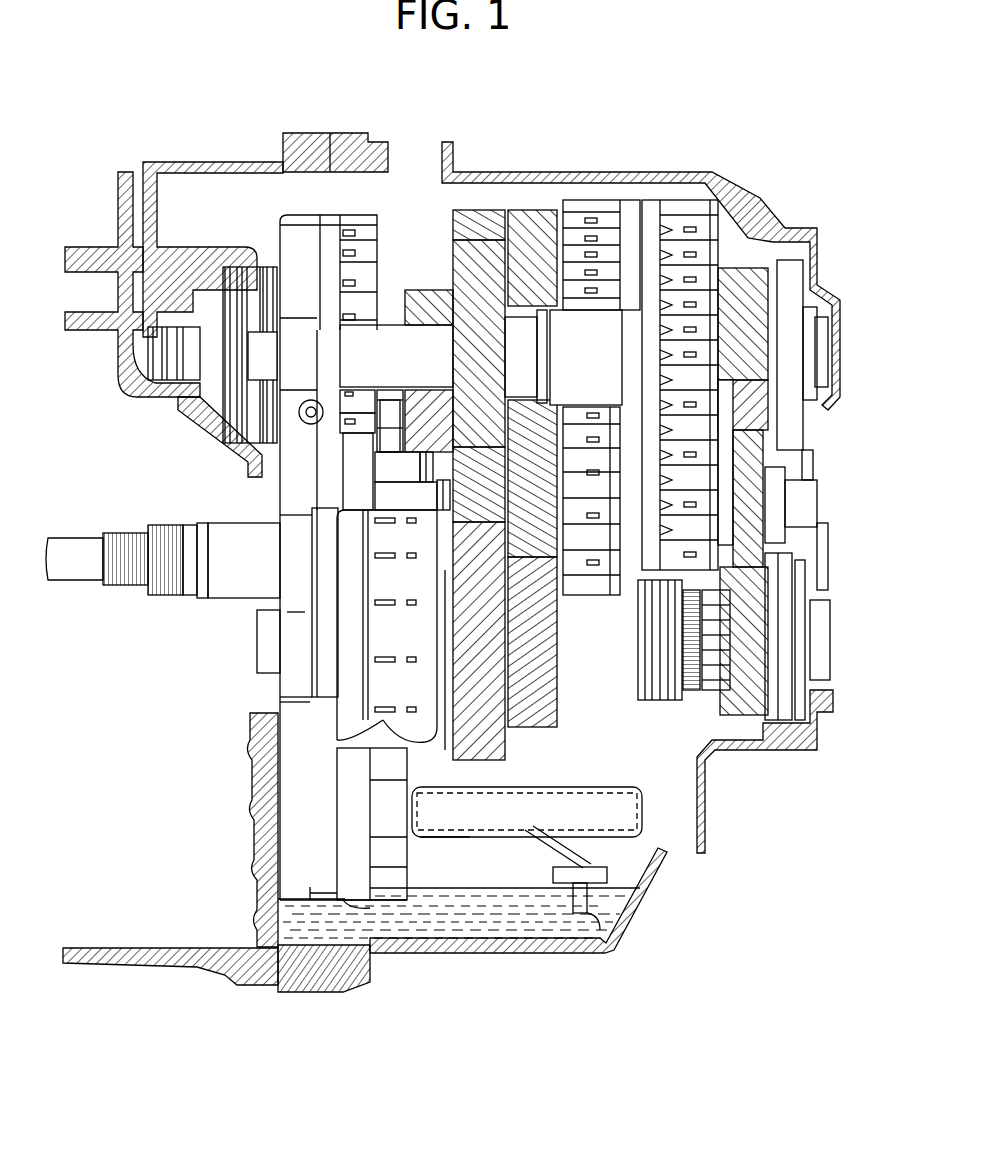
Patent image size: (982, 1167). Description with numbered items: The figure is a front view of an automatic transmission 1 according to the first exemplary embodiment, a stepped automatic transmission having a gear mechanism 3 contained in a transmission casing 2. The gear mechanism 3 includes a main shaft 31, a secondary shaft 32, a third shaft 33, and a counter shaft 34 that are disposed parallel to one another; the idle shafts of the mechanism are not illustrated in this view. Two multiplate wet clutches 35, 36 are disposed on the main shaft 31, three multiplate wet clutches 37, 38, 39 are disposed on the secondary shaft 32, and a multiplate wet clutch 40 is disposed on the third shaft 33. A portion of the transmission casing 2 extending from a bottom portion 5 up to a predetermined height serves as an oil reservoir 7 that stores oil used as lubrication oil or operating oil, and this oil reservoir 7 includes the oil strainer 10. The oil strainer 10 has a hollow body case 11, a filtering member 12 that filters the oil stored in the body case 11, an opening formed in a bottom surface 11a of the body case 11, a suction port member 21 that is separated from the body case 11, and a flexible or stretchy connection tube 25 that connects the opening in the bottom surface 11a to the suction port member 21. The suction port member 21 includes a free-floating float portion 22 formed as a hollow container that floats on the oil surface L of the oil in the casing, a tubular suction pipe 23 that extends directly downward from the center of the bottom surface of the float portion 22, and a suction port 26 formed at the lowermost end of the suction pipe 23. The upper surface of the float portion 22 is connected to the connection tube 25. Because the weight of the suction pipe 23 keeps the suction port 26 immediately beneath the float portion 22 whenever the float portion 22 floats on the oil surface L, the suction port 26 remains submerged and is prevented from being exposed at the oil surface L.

The automatic transmission 1 is at (735, 165).
The transmission casing 2 is at (451, 580).
The gear mechanism 3 is at (742, 246).
The bottom portion 5 is at (510, 932).
The oil reservoir 7 is at (656, 842).
The oil strainer 10 is at (541, 858).
The body case 11 is at (622, 787).
The bottom surface 11a is at (452, 840).
The filtering member 12 is at (635, 812).
The suction port member 21 is at (650, 920).
The float portion 22 is at (553, 874).
The suction pipe 23 is at (577, 905).
The connection tube 25 is at (540, 850).
The suction port 26 is at (598, 920).
The main shaft 31 is at (230, 538).
The secondary shaft 32 is at (190, 352).
The third shaft 33 is at (262, 650).
The counter shaft 34 is at (388, 330).
The multiplate wet clutch 35 is at (588, 560).
The multiplate wet clutch 36 is at (703, 705).
The multiplate wet clutch 37 is at (345, 215).
The multiplate wet clutch 38 is at (598, 200).
The multiplate wet clutch 39 is at (690, 200).
The multiplate wet clutch 40 is at (333, 731).
The oil surface L is at (645, 890).